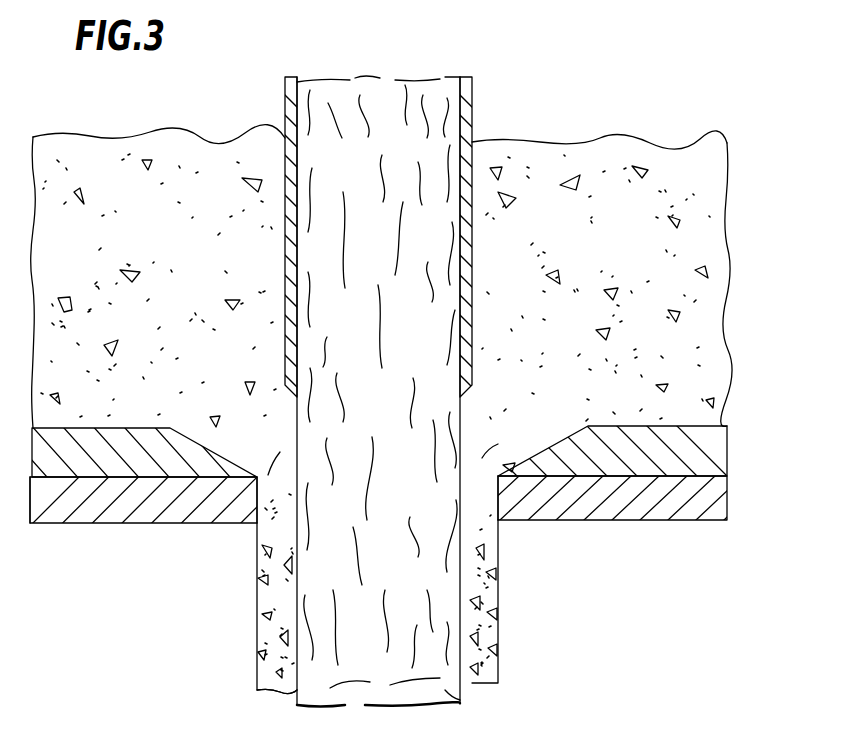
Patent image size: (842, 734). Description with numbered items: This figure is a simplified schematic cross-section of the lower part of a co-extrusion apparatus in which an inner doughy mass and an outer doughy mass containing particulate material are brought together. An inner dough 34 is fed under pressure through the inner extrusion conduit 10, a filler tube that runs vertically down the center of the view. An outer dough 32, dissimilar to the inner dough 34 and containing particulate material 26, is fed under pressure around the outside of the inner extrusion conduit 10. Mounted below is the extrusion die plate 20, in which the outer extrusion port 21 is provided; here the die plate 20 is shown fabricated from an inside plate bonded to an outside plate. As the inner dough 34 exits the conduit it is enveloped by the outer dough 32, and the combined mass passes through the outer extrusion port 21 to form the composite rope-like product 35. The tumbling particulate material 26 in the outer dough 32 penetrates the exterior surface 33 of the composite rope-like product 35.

The inner extrusion conduit 10 is at (473, 160).
The extrusion die plate 20 is at (648, 521).
The outer extrusion port 21 is at (200, 550).
The particulate material 26 is at (72, 302).
The outer dough 32 is at (287, 128).
The exterior surface 33 is at (497, 638).
The inner dough 34 is at (497, 690).
The composite rope-like product 35 is at (205, 656).